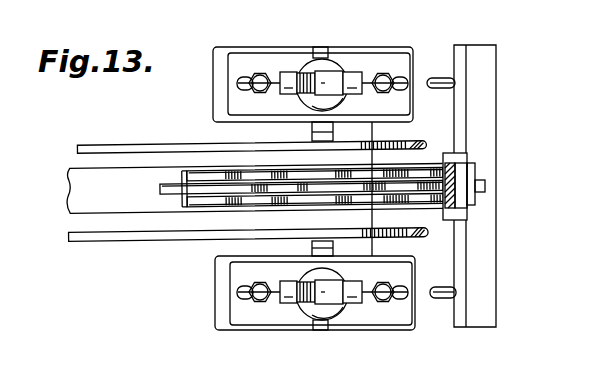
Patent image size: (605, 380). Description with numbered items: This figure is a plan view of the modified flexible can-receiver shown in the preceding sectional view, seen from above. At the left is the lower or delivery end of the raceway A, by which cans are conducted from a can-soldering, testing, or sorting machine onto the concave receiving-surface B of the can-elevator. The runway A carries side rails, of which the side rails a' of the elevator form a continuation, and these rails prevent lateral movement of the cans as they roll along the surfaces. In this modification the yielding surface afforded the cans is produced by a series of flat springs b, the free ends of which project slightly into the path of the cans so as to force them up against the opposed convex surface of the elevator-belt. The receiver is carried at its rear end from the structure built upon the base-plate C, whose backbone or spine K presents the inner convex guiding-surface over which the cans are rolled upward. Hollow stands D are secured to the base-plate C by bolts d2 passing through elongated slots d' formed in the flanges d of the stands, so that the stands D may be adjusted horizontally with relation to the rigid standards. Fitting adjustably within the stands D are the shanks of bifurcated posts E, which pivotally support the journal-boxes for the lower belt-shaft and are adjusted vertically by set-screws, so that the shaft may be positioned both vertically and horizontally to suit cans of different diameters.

The raceway A is at (233, 157).
The concave can-receiver B is at (118, 208).
The side rails a' is at (247, 181).
The flat spring b is at (301, 186).
The base-plate C is at (471, 186).
The backbone or spine K is at (452, 166).
The hollow stand D is at (323, 186).
The bifurcated post E is at (318, 179).
The flange d is at (323, 189).
The elongated slot d' is at (347, 174).
The bolt d2 is at (323, 199).